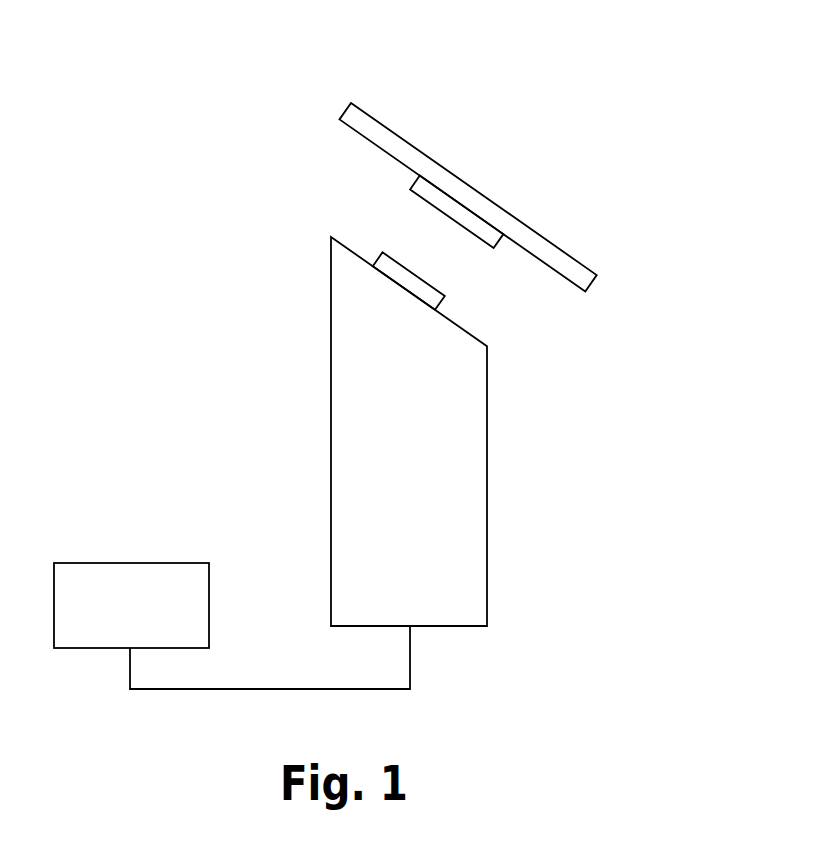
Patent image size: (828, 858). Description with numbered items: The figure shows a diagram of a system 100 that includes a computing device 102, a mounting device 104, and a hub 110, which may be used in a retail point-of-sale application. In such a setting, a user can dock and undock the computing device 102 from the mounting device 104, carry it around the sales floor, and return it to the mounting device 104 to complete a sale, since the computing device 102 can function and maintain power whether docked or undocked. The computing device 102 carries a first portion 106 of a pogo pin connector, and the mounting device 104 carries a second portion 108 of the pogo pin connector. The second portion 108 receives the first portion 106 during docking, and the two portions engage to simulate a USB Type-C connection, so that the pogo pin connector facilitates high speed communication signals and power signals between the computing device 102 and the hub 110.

The system 100 is at (565, 93).
The computing device 102 is at (594, 283).
The mounting device 104 is at (488, 519).
The first portion of pogo pin connector 106 is at (503, 238).
The second portion of pogo pin connector 108 is at (391, 253).
The hub 110 is at (209, 608).